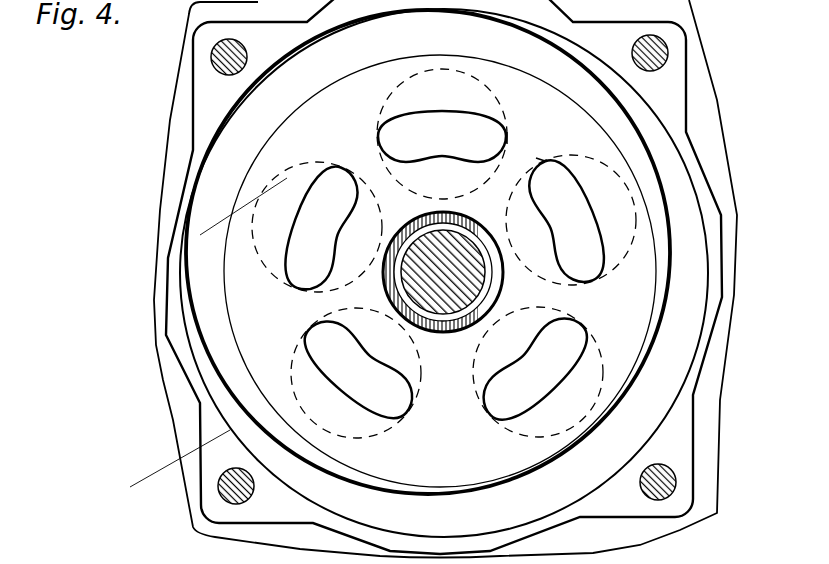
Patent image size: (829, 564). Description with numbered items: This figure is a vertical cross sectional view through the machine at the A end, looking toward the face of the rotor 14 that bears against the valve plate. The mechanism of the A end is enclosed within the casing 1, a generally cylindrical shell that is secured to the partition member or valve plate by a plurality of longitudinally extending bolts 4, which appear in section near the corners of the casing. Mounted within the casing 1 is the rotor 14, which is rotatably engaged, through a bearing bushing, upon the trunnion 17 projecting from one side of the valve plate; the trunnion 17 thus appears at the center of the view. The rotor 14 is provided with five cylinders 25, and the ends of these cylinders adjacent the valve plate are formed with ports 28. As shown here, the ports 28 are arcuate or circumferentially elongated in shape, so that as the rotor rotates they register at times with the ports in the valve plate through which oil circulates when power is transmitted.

The casing 1 is at (193, 84).
The A end A is at (688, 114).
The bolts 4 is at (211, 57).
The rotor 14 is at (422, 143).
The trunnion 17 is at (446, 305).
The cylinders 25 is at (594, 285).
The ports 28 is at (540, 160).